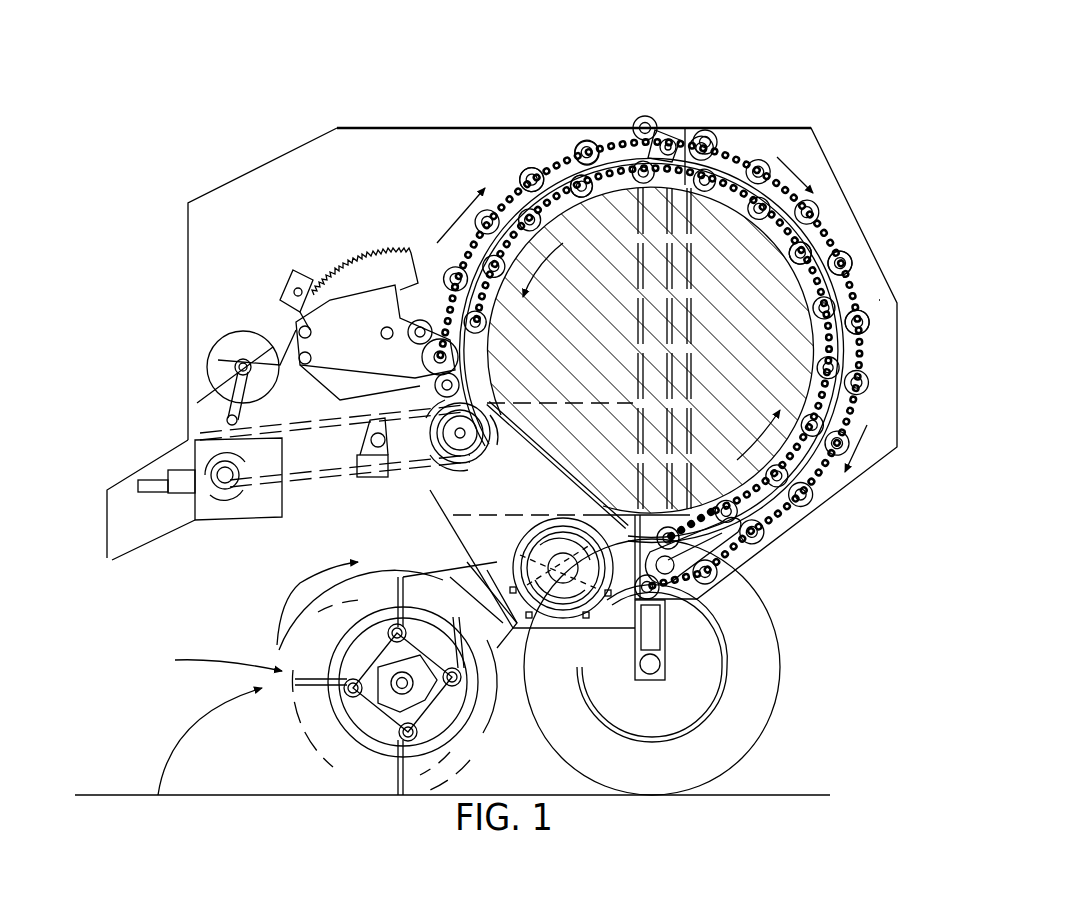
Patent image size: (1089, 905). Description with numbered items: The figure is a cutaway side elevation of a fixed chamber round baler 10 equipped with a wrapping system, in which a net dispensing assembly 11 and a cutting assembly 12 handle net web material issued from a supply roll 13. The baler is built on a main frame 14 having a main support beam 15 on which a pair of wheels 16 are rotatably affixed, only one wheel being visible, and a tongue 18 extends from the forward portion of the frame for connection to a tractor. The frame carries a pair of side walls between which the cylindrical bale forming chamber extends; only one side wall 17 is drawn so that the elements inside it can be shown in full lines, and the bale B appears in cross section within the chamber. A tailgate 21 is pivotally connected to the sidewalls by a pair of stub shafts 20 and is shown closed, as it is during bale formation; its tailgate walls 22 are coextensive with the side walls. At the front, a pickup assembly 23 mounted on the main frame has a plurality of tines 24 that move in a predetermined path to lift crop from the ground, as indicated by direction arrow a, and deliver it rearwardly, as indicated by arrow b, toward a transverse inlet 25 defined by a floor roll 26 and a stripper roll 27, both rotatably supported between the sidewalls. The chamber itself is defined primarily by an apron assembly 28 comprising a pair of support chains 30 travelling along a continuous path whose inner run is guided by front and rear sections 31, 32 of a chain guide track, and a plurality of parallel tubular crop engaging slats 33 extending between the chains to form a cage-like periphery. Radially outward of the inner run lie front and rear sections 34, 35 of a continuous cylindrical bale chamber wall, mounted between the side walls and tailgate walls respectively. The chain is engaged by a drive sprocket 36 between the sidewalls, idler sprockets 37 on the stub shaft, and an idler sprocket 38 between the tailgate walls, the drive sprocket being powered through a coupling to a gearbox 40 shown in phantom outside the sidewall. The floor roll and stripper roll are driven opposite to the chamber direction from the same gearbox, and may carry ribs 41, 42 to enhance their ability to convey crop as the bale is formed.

The round baler 10 is at (955, 112).
The net dispensing assembly 11 is at (283, 260).
The cutting assembly 12 is at (340, 450).
The supply roll 13 is at (218, 345).
The main frame 14 is at (417, 127).
The main support beam 15 is at (667, 625).
The wheels 16 is at (780, 695).
The side wall 17 is at (280, 185).
The tongue 18 is at (132, 537).
The stub shafts 20 is at (677, 125).
The tailgate 21 is at (873, 247).
The tailgate walls 22 is at (880, 433).
The pickup assembly 23 is at (213, 661).
The tines 24 is at (397, 768).
The transverse inlet 25 is at (447, 505).
The floor roll 26 is at (548, 628).
The stripper roll 27 is at (418, 462).
The apron assembly 28 is at (815, 208).
The support chains 30 is at (855, 292).
The front section of chain guide track 31 is at (522, 190).
The rear section of chain guide track 32 is at (853, 283).
The crop engaging slats 33 is at (590, 152).
The front section of bale chamber wall 34 is at (620, 148).
The rear section of bale chamber wall 35 is at (712, 140).
The drive sprocket 36 is at (421, 320).
The idler sprockets 37 is at (653, 120).
The idler sprocket 38 is at (677, 560).
The gearbox 40 is at (228, 502).
The ribs 41 is at (503, 567).
The ribs 42 is at (433, 425).
The bale B is at (800, 320).
The direction arrow a is at (232, 705).
The direction arrow b is at (313, 587).